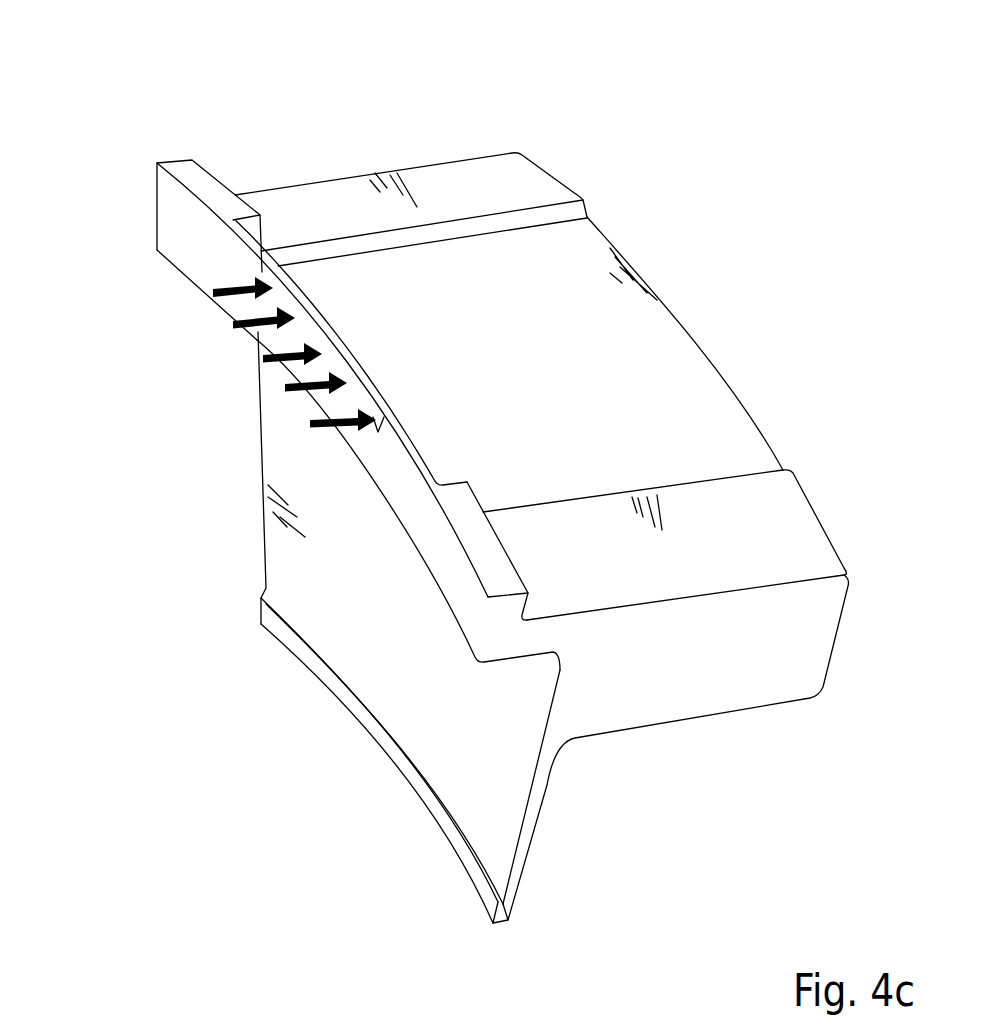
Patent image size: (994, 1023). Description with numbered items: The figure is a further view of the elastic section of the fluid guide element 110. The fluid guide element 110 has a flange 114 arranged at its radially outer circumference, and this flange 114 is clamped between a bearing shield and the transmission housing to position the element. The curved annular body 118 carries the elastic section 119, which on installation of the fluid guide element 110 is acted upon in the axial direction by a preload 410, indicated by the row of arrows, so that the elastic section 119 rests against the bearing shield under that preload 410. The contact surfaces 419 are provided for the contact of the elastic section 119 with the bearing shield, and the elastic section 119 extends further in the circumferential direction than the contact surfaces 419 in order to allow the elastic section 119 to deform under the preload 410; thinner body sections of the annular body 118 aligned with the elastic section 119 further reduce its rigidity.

The fluid guide element 110 is at (298, 104).
The flange 114 is at (197, 177).
The annular body 118 is at (530, 185).
The elastic section 119 is at (363, 355).
The preload 410 is at (258, 338).
The contact surface 419 is at (283, 295).